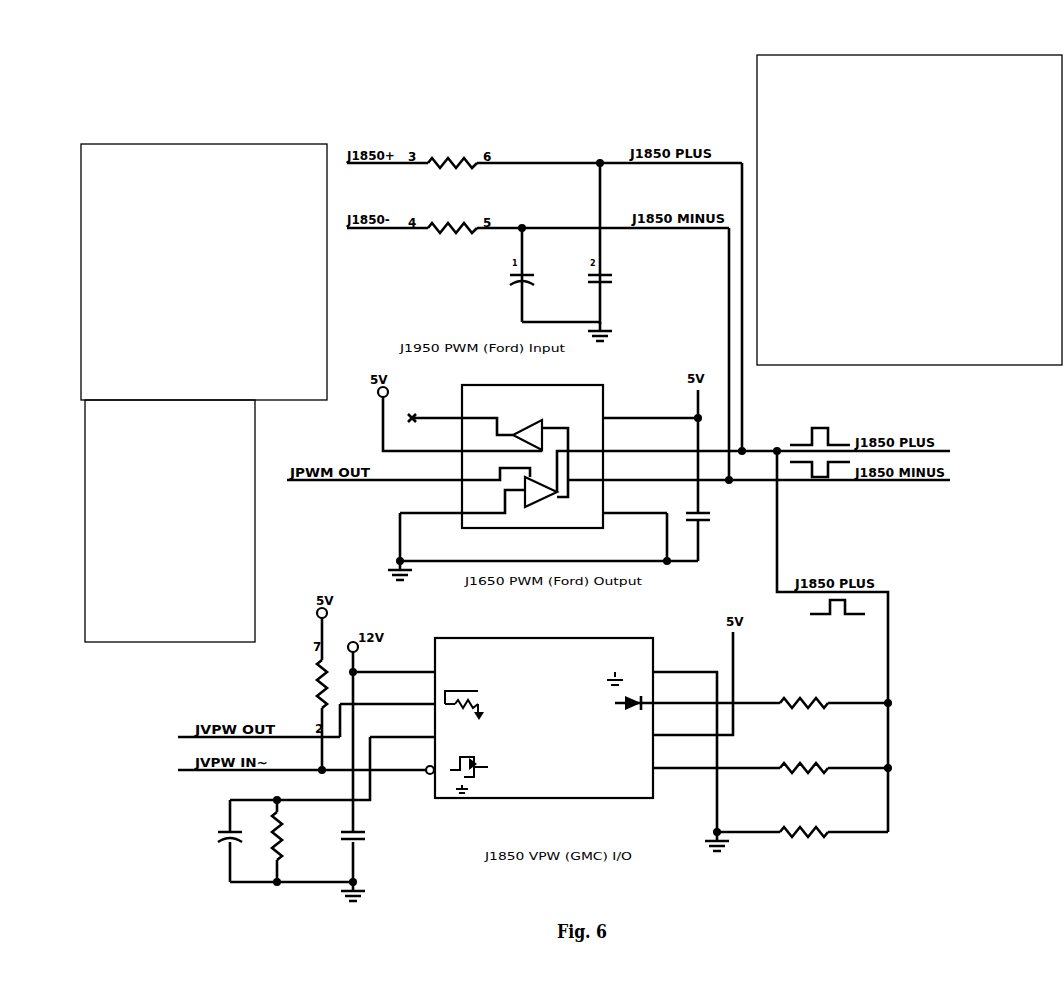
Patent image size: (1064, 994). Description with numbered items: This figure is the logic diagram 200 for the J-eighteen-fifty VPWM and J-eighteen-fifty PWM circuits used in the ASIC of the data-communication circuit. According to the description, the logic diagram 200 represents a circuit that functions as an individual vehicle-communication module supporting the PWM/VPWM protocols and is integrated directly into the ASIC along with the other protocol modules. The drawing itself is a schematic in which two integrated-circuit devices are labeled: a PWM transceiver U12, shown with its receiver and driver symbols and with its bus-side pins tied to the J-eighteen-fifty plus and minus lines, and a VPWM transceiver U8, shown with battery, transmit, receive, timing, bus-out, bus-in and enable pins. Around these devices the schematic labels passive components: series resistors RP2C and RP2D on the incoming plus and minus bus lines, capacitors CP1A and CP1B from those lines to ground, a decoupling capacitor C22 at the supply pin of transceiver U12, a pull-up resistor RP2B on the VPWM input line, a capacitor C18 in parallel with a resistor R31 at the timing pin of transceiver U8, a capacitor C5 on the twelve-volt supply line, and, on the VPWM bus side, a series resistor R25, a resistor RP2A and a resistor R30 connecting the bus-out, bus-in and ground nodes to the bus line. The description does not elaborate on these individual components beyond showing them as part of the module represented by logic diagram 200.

The logic diagram 200 is at (980, 263).
The RS485 transceiver U12 is at (533, 466).
The J1850 VPW transceiver U8 is at (543, 721).
The resistor 15K RP2C is at (452, 165).
The resistor 15K RP2D is at (452, 229).
The capacitor 470pF CP1A is at (547, 281).
The capacitor 470pF CP1B is at (625, 281).
The capacitor 0.1uF C22 is at (719, 530).
The resistor 15K RP2B is at (302, 684).
The capacitor 100pF C18 is at (211, 843).
The resistor 56K R31 is at (307, 839).
The capacitor 0.1uF 25V C5 is at (391, 848).
The resistor 10 R25 is at (804, 705).
The resistor 15K RP2A is at (805, 770).
The resistor 10K R30 is at (804, 835).